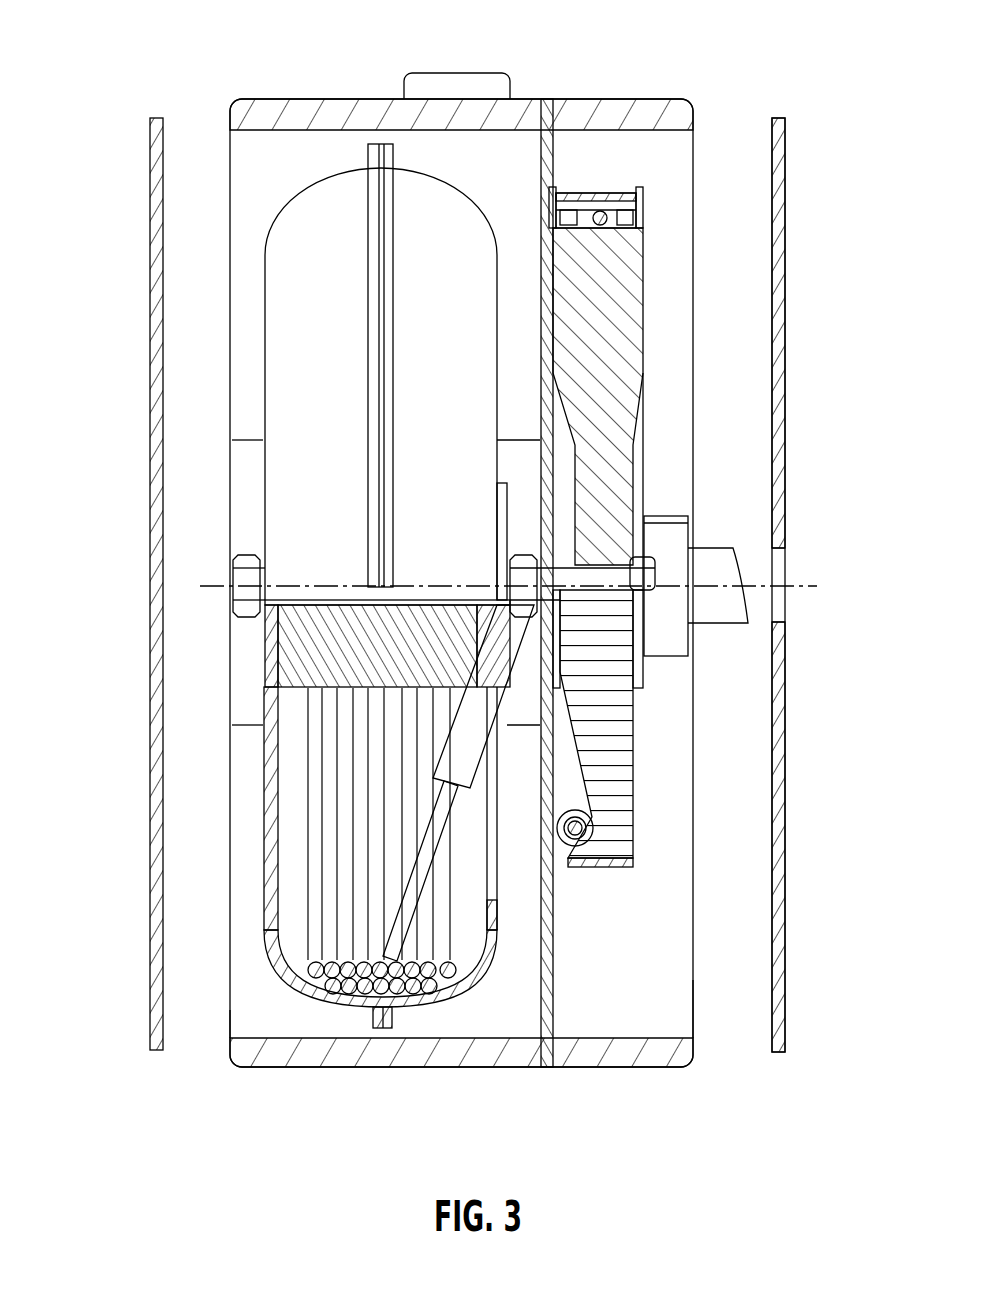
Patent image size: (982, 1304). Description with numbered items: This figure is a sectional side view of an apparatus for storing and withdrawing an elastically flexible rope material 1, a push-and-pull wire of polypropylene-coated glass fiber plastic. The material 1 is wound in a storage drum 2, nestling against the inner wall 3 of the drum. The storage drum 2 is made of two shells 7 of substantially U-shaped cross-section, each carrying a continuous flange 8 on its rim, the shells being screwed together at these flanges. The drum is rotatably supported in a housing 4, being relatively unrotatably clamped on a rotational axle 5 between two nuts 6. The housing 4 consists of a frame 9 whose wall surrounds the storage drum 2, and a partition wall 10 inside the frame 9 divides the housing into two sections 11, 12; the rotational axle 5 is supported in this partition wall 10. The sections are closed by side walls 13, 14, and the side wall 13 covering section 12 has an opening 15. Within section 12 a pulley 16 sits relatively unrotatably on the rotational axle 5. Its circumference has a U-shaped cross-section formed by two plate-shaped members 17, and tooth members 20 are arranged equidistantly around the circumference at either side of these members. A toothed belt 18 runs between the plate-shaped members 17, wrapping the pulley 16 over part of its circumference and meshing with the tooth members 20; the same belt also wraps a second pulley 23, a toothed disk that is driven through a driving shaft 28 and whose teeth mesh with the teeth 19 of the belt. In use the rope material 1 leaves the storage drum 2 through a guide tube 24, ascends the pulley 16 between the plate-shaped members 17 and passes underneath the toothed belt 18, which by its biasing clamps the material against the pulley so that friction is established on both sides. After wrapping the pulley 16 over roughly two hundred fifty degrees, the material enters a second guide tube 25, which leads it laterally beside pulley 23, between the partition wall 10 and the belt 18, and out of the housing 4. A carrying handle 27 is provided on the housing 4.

The elastically flexible rope material 1 is at (430, 1000).
The storage drum 2 is at (263, 418).
The inner wall 3 is at (297, 903).
The housing 4 is at (572, 99).
The rotational axle 5 is at (556, 570).
The nuts 6 is at (245, 577).
The shells 7 is at (295, 233).
The flange 8 is at (372, 165).
The frame 9 is at (513, 1050).
The partition wall 10 is at (543, 1010).
The section 11 is at (263, 1023).
The section 12 is at (668, 1013).
The side wall 13 is at (785, 300).
The side wall 14 is at (150, 500).
The opening 15 is at (787, 602).
The pulley 16 is at (628, 275).
The plate-shaped members 17 is at (553, 190).
The toothed belt 18 is at (628, 195).
The teeth 19 is at (612, 195).
The tooth members 20 is at (630, 218).
The second pulley 23 is at (636, 668).
The guide tube 24 is at (478, 740).
The guide tube 25 is at (562, 845).
The carrying handle 27 is at (470, 83).
The driving shaft 28 is at (708, 598).